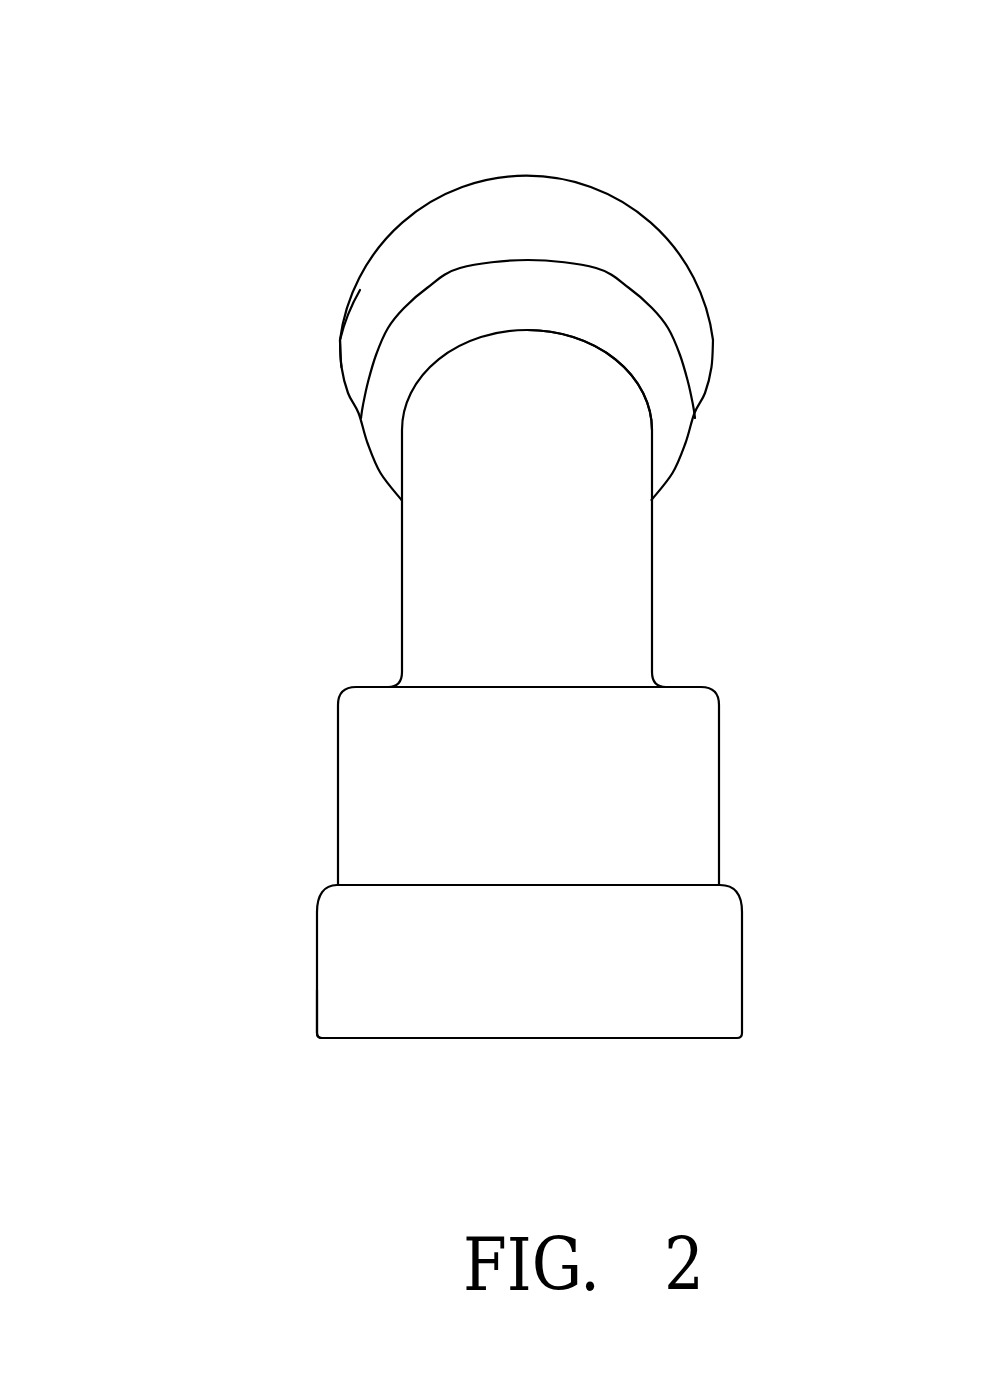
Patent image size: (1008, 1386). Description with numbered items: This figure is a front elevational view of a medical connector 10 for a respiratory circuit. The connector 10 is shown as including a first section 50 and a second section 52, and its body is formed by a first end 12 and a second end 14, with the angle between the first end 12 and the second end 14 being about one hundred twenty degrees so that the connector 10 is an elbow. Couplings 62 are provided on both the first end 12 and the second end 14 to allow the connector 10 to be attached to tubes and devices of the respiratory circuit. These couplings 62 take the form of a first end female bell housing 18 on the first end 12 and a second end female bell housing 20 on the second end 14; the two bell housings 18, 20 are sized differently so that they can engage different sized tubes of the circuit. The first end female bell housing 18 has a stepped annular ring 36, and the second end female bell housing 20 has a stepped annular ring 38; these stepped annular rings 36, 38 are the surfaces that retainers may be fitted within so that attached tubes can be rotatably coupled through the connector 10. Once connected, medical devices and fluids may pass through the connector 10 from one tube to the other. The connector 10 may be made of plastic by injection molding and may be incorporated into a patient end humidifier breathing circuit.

The connector 10 is at (183, 27).
The first end 12 is at (430, 655).
The second end 14 is at (460, 423).
The first end female bell housing 18 is at (655, 850).
The second end female bell housing 20 is at (687, 333).
The stepped annular ring 36 is at (680, 995).
The stepped annular ring 38 is at (662, 250).
The first section 50 is at (610, 658).
The second section 52 is at (570, 420).
The couplings 62 is at (378, 277).